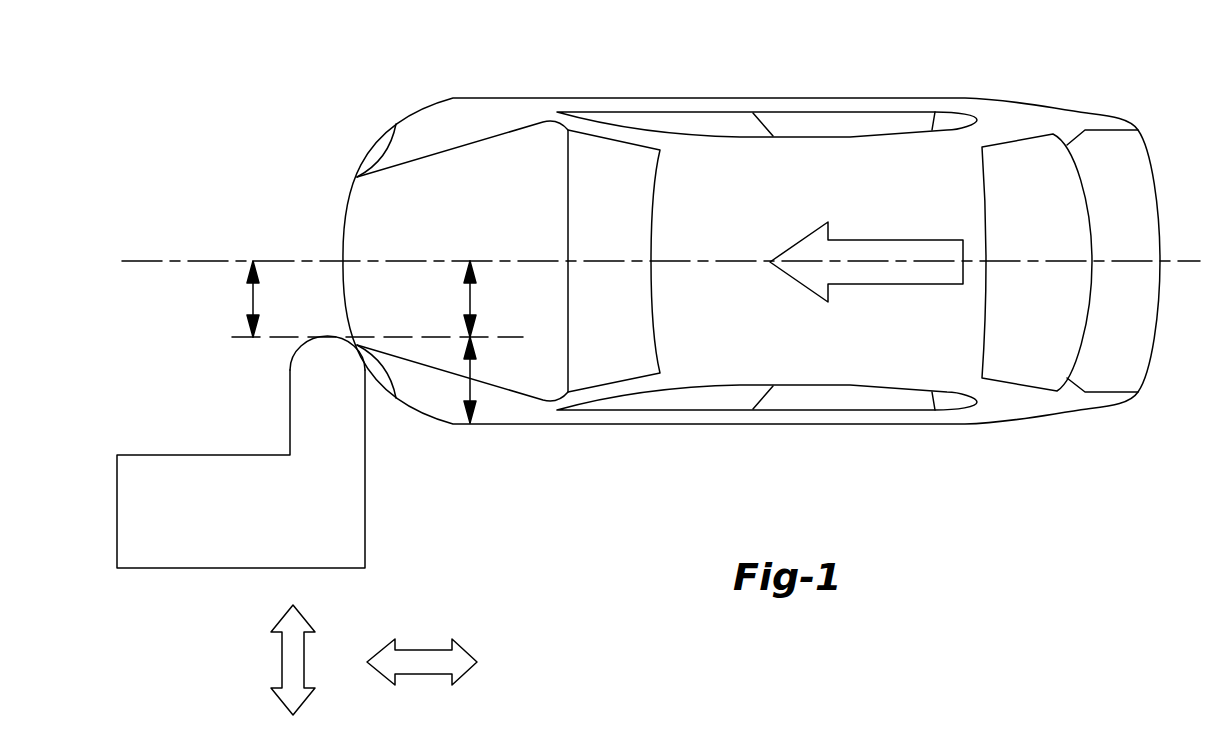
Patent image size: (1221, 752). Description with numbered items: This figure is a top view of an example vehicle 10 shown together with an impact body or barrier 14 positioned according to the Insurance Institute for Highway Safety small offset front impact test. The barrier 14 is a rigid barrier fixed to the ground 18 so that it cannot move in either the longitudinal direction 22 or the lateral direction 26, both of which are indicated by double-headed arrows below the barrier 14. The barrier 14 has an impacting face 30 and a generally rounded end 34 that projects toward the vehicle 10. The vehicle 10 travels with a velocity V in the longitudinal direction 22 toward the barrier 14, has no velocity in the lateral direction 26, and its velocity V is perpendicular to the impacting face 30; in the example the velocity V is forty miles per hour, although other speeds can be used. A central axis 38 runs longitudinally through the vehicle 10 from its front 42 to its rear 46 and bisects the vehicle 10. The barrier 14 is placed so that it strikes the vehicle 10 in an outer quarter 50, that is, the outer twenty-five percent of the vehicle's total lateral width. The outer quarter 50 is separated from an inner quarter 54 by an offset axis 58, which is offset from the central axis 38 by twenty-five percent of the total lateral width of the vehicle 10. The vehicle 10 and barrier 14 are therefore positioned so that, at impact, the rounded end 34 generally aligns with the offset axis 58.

The vehicle 10 is at (728, 225).
The impact body or barrier 14 is at (280, 459).
The ground 18 is at (264, 190).
The longitudinal direction 22 is at (423, 650).
The lateral direction 26 is at (282, 658).
The impacting face 30 is at (365, 503).
The rounded end 34 is at (330, 336).
The central axis 38 is at (147, 257).
The front 42 is at (350, 200).
The rear 46 is at (1160, 223).
The outer quarter 50 is at (472, 390).
The inner quarter 54 is at (475, 290).
The offset axis 58 is at (262, 342).
The velocity V is at (868, 240).